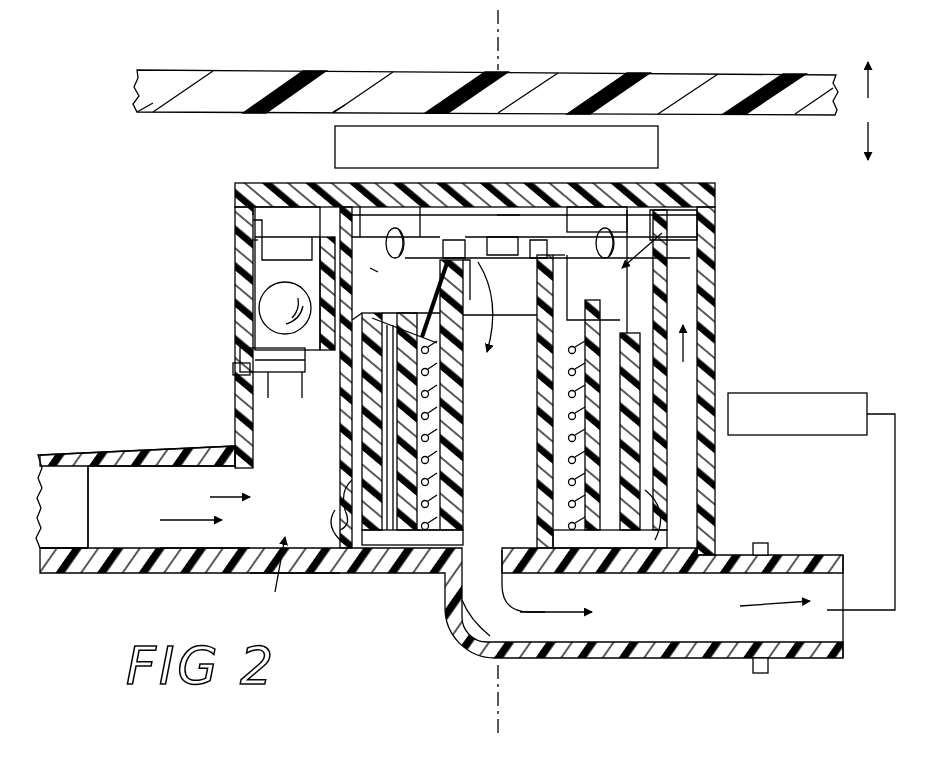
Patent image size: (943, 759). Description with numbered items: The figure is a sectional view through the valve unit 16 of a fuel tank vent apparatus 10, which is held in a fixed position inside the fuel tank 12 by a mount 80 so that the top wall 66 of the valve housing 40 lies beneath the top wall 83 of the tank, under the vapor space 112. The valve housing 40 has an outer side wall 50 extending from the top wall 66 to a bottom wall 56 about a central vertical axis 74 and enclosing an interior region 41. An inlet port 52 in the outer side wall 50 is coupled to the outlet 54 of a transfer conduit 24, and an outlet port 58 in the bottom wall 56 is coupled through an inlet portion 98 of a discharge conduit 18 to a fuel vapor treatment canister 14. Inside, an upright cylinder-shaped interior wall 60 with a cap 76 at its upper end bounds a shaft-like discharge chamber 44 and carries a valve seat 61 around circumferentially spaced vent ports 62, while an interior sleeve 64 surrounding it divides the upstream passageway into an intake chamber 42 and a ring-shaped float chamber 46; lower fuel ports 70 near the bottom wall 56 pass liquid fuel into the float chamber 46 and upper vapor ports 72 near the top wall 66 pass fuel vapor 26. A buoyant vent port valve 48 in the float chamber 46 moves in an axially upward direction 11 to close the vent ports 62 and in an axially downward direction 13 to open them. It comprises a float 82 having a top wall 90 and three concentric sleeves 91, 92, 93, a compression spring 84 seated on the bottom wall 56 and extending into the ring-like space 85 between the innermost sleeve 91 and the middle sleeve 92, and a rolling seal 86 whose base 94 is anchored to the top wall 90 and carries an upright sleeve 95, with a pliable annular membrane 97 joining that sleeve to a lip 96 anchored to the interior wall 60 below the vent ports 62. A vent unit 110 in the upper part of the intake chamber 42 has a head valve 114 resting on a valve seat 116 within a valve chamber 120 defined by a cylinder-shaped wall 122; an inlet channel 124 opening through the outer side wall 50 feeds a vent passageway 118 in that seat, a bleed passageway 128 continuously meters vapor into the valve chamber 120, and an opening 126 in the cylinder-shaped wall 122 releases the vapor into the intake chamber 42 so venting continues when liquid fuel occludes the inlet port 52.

The vent apparatus 10 is at (136, 207).
The axially upward direction 11 is at (870, 95).
The fuel tank 12 is at (245, 62).
The axially downward direction 13 is at (870, 124).
The fuel vapor treatment canister 14 is at (840, 393).
The valve unit 16 is at (740, 321).
The discharge conduit 18 is at (781, 550).
The transfer conduit 24 is at (47, 447).
The fuel vapor 26 is at (250, 496).
The valve housing 40 is at (708, 183).
The interior region 41 is at (240, 545).
The intake chamber 42 is at (274, 573).
The discharge chamber 44 is at (470, 577).
The float chamber 46 is at (320, 190).
The buoyant vent port valve 48 is at (370, 235).
The outer side wall 50 is at (716, 380).
The inlet port 52 is at (112, 548).
The outlet of transfer conduit 54 is at (62, 576).
The bottom wall 56 is at (262, 573).
The outlet port 58 is at (535, 548).
The interior wall 60 is at (455, 410).
The valve seat 61 is at (479, 243).
The vent ports 62 is at (415, 250).
The interior sleeve 64 is at (345, 418).
The top wall 66 is at (256, 183).
The lower fuel ports 70 is at (345, 548).
The upper vapor ports 72 is at (375, 207).
The central vertical axis 74 is at (492, 22).
The cap 76 is at (518, 240).
The mount 80 is at (658, 148).
The float 82 is at (668, 305).
The top wall of fuel tank 83 is at (338, 88).
The compression spring 84 is at (600, 562).
The ring-like space 85 is at (440, 510).
The rolling seal 86 is at (574, 244).
The top wall of float 90 is at (613, 325).
The radially innermost sleeve 91 is at (440, 478).
The middle sleeve 92 is at (425, 548).
The outer sleeve 93 is at (352, 488).
The base 94 is at (352, 320).
The upright sleeve 95 is at (375, 268).
The lip 96 is at (458, 298).
The pliable annular membrane 97 is at (424, 205).
The inlet portion of discharge conduit 98 is at (456, 625).
The vent unit 110 is at (231, 283).
The vapor space 112 is at (176, 130).
The head valve 114 is at (275, 305).
The valve seat of vent unit 116 is at (283, 410).
The vent passageway 118 is at (272, 397).
The valve chamber 120 is at (285, 253).
The cylinder-shaped wall 122 is at (296, 278).
The inlet channel 124 is at (240, 372).
The opening 126 is at (255, 222).
The bleed passageway 128 is at (240, 352).